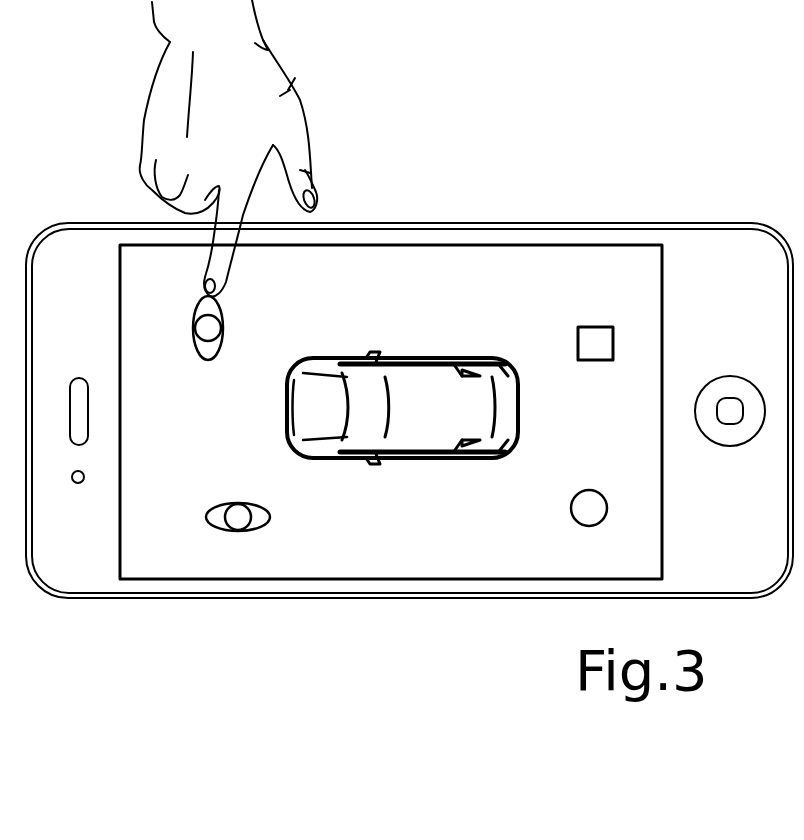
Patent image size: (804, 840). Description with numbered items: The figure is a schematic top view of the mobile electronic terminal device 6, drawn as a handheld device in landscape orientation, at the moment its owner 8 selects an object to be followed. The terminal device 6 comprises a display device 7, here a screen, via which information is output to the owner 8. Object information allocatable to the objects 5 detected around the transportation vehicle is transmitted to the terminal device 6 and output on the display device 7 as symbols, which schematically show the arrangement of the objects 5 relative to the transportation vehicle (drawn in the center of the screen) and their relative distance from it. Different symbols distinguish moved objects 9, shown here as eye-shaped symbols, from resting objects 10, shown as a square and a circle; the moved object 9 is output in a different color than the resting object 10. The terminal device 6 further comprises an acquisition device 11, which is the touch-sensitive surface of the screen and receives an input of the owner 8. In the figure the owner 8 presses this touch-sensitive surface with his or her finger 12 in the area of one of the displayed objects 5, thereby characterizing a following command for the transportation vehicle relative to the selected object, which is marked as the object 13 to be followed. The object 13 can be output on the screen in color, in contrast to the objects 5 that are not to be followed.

The object 5 is at (376, 408).
The mobile electronic terminal device 6 is at (443, 236).
The display device 7 is at (540, 245).
The owner 8 is at (277, 95).
The moved object 9 is at (225, 400).
The resting object 10 is at (596, 327).
The acquisition device 11 is at (612, 245).
The finger 12 is at (203, 270).
The object to be followed 13 is at (197, 321).